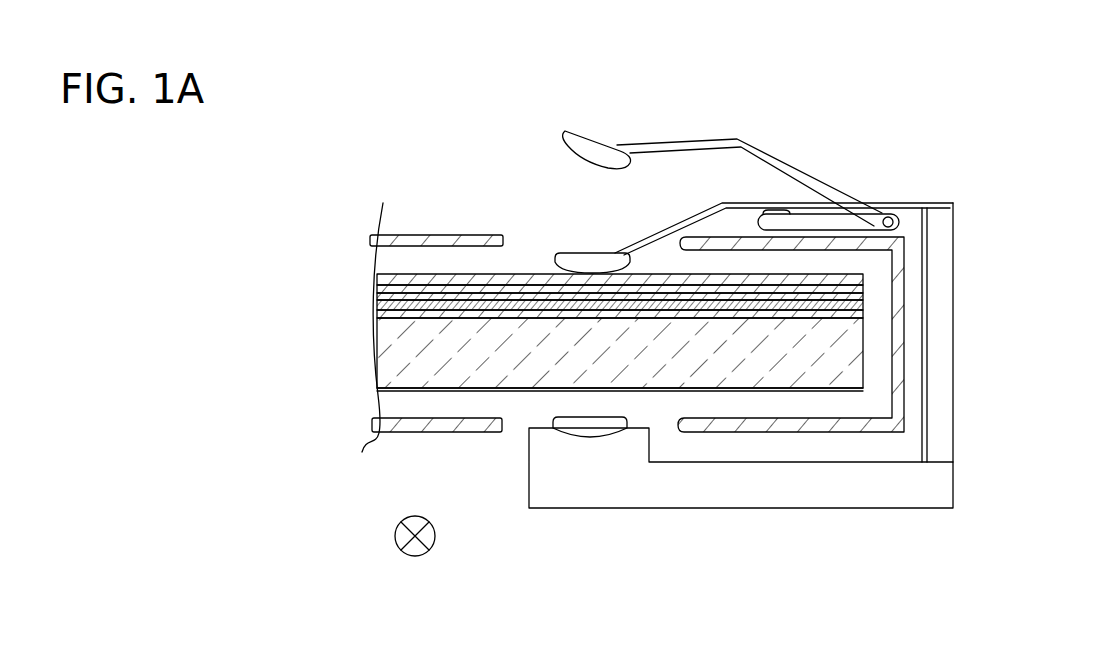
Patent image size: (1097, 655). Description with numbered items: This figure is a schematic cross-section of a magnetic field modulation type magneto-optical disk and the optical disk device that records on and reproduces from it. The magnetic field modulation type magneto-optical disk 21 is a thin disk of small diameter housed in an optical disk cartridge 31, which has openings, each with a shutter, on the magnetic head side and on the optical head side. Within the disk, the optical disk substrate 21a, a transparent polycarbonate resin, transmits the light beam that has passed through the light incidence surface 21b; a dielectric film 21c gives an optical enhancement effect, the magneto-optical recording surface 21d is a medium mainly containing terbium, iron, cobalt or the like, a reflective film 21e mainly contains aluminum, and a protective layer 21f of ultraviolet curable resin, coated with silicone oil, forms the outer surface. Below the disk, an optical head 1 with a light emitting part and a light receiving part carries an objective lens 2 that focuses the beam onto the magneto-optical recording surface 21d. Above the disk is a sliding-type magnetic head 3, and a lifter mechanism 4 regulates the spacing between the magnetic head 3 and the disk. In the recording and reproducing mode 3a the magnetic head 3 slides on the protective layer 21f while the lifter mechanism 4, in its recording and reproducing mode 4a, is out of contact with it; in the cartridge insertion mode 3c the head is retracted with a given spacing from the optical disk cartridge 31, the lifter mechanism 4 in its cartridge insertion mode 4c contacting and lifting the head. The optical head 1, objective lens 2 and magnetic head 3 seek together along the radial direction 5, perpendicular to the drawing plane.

The optical head 1 is at (648, 492).
The objective lens 2 is at (583, 437).
The sliding-type magnetic head 3 is at (413, 100).
The recording and reproducing mode 3a is at (585, 268).
The cartridge insertion mode 3c is at (562, 133).
The lifter mechanism 4 is at (733, 52).
The recording and reproducing mode of the lifter mechanism 4a is at (758, 220).
The cartridge insertion mode of the lifter mechanism 4c is at (884, 217).
The radial direction 5 is at (415, 557).
The magnetic field modulation type magneto-optical disk 21 is at (258, 193).
The optical disk substrate 21a is at (377, 358).
The light incidence surface 21b is at (380, 392).
The dielectric film 21c is at (380, 297).
The magneto-optical recording surface 21d is at (380, 306).
The reflective film 21e is at (380, 289).
The protective layer 21f is at (383, 276).
The optical disk cartridge 31 is at (397, 238).